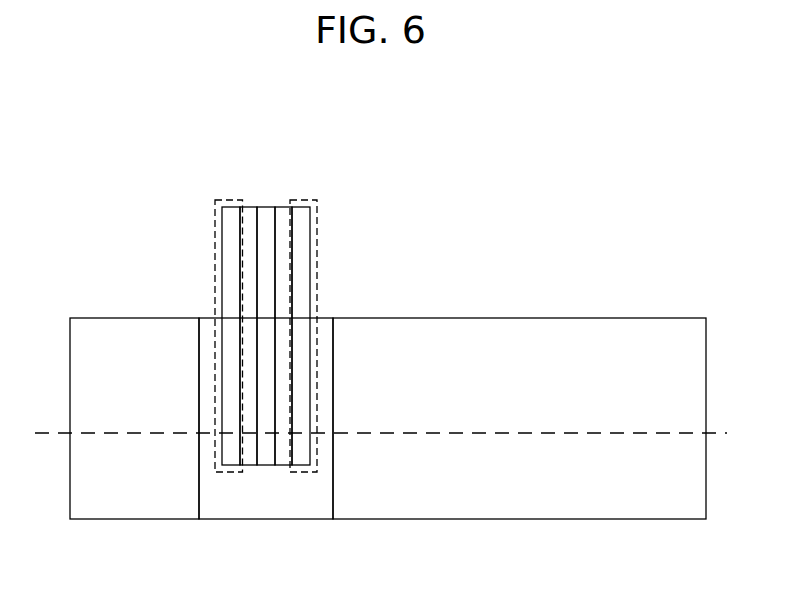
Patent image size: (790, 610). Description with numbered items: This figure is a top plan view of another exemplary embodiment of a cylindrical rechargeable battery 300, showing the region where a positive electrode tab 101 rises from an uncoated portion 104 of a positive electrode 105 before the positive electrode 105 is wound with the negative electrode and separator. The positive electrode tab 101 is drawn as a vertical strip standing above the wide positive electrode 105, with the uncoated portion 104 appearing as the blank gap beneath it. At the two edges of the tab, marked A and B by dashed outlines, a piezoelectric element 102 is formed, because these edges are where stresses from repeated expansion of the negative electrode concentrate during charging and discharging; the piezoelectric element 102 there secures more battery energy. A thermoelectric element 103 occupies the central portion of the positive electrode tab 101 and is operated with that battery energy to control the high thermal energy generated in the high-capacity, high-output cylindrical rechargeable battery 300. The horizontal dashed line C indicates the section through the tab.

The cylindrical rechargeable battery 300 is at (88, 159).
The positive electrode tab 101 is at (251, 213).
The piezoelectric element 102 is at (231, 261).
The thermoelectric element 103 is at (265, 230).
The uncoated portion 104 is at (268, 503).
The positive electrode 105 is at (529, 328).